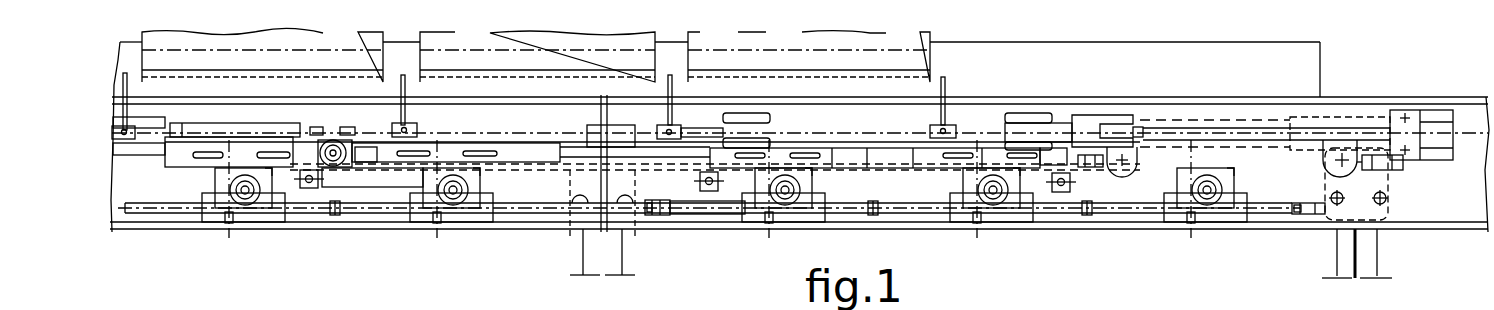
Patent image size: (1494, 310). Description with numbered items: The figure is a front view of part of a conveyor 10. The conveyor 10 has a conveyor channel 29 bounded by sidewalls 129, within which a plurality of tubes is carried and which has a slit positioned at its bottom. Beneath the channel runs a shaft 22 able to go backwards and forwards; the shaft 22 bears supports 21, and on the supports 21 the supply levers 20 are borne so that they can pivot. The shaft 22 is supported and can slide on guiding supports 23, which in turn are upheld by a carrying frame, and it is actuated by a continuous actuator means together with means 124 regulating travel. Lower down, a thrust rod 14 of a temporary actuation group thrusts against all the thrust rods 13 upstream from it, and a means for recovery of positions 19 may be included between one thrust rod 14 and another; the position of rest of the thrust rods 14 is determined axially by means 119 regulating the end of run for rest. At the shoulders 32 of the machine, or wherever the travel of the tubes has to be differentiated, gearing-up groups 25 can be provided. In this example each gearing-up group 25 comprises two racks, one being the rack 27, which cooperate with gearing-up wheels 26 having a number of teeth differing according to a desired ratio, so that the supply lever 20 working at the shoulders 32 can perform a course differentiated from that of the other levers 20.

The conveyor 10 is at (203, 248).
The thrust rods 13 is at (987, 233).
The thrust rod 14 is at (708, 214).
The means for recovery of positions 19 is at (657, 216).
The supply levers 20 is at (683, 128).
The supports 21 is at (690, 136).
The shaft 22 is at (853, 135).
The guiding supports 23 is at (1027, 117).
The gearing-up groups 25 is at (340, 172).
The gearing-up wheels 26 is at (348, 148).
The rack 27 is at (393, 168).
The conveyor channel 29 is at (1097, 83).
The shoulders 32 is at (592, 253).
The means regulating the end of run for rest 119 is at (1295, 228).
The means regulating travel 124 is at (1374, 175).
The sidewalls 129 is at (1308, 73).